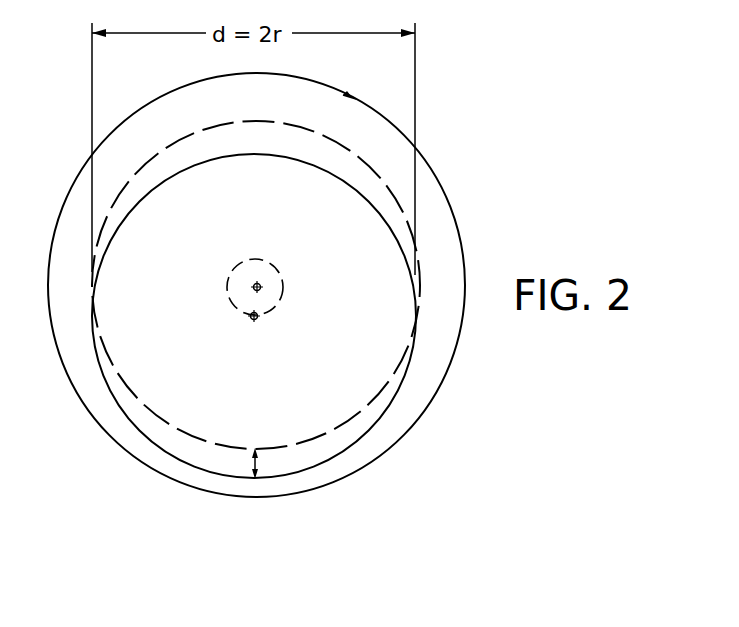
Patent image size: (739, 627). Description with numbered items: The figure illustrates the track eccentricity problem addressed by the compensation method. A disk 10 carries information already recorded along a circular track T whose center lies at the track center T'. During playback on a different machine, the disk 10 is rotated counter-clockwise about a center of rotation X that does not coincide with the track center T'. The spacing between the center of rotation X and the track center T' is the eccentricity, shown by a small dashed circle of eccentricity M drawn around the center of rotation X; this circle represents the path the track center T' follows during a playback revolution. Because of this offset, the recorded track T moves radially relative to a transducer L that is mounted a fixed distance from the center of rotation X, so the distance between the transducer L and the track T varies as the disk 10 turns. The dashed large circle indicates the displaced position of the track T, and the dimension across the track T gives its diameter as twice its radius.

The disk 10 is at (457, 232).
The circular track T is at (284, 316).
The circle of eccentricity M is at (227, 270).
The center of rotation X is at (260, 287).
The track center T' is at (247, 343).
The transducer L is at (257, 463).